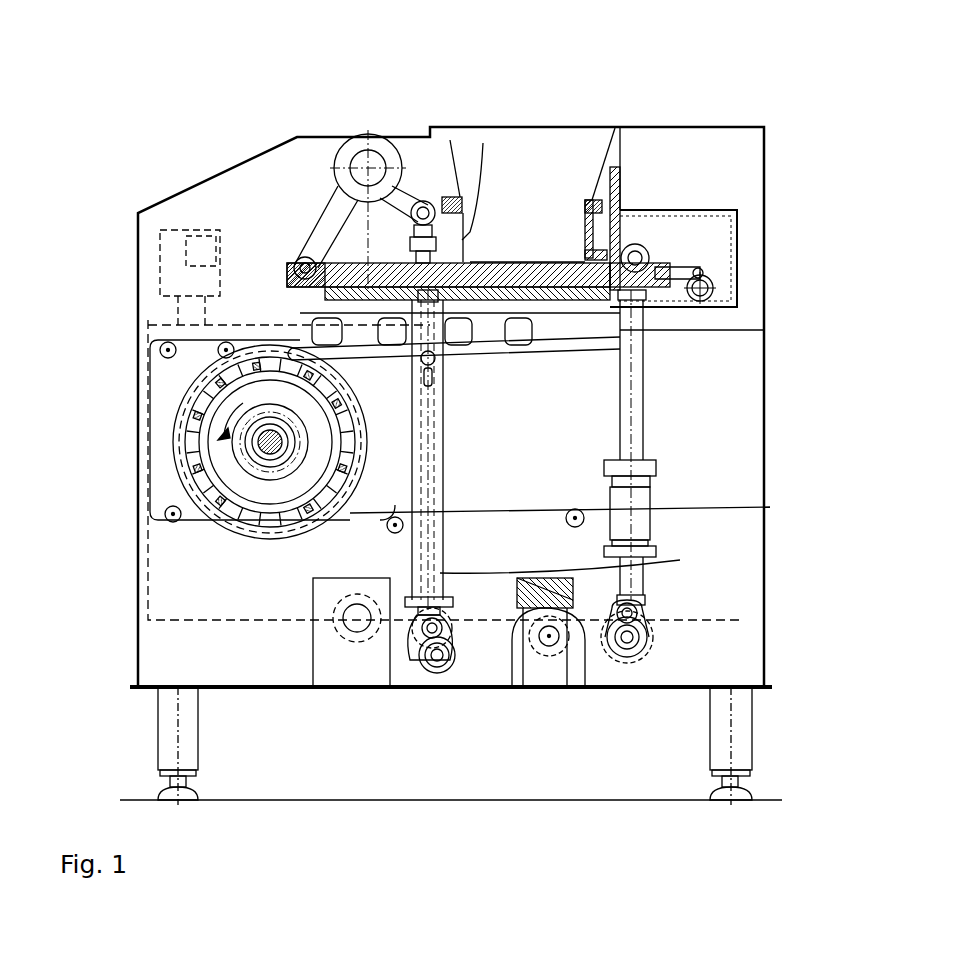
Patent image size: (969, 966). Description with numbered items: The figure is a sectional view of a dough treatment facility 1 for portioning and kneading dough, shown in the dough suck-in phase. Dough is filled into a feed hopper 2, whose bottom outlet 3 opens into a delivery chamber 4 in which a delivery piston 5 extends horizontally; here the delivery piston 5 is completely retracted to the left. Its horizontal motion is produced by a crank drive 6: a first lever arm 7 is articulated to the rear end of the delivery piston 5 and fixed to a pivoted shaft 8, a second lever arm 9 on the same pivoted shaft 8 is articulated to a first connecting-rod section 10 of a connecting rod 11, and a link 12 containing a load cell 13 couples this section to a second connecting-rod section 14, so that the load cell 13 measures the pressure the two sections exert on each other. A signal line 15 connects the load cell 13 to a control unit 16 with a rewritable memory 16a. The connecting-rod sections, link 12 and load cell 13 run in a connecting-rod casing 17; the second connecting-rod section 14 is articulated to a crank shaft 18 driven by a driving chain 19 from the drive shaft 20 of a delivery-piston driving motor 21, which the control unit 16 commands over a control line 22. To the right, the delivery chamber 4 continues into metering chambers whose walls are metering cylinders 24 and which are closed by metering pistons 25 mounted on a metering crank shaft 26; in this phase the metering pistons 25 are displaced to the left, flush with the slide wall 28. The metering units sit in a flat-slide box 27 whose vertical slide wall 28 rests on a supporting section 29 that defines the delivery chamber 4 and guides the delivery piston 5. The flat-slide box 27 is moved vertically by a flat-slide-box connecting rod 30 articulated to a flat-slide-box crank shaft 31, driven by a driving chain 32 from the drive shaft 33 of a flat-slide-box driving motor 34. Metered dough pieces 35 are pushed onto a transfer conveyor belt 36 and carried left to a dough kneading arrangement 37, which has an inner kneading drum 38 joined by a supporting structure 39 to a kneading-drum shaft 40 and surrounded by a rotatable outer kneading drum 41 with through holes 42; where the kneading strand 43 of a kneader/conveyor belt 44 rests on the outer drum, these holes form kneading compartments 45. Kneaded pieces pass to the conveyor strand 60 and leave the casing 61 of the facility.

The dough treatment facility 1 is at (549, 92).
The feed hopper 2 is at (498, 168).
The bottom outlet 3 is at (462, 140).
The delivery chamber 4 is at (543, 270).
The delivery piston 5 is at (287, 292).
The crank drive 6 is at (314, 204).
The first lever arm 7 is at (332, 178).
The pivoted shaft 8 is at (352, 140).
The second lever arm 9 is at (412, 190).
The first connecting-rod section 10 is at (418, 225).
The connecting rod 11 is at (657, 468).
The link 12 is at (300, 313).
The load cell 13 is at (610, 300).
The second connecting-rod section 14 is at (680, 560).
The signal line 15 is at (160, 352).
The control unit 16 is at (160, 272).
The rewritable memory 16a is at (200, 250).
The connecting-rod casing 17 is at (450, 450).
The crank shaft 18 is at (445, 668).
The driving chain 19 is at (415, 650).
The drive shaft 20 is at (357, 620).
The delivery-piston driving motor 21 is at (325, 640).
The control line 22 is at (183, 620).
The metering cylinder 24 is at (737, 210).
The metering piston 25 is at (705, 268).
The metering crank shaft 26 is at (713, 288).
The flat-slide box 27 is at (737, 240).
The slide wall 28 is at (603, 257).
The supporting section 29 is at (640, 257).
The flat-slide-box connecting rod 30 is at (644, 420).
The flat-slide-box crank shaft 31 is at (641, 645).
The driving chain 32 is at (606, 662).
The drive shaft 33 is at (552, 648).
The flat-slide-box driving motor 34 is at (522, 676).
The dough pieces 35 is at (620, 333).
The transfer conveyor belt 36 is at (620, 345).
The dough kneading arrangement 37 is at (367, 492).
The inner kneading drum 38 is at (236, 444).
The supporting structure 39 is at (185, 440).
The kneading-drum shaft 40 is at (232, 446).
The outer kneading drum 41 is at (253, 523).
The through holes 42 is at (266, 525).
The kneading strand 43 is at (200, 405).
The kneader/conveyor belt 44 is at (652, 500).
The kneading compartments 45 is at (258, 455).
The conveyor strand 60 is at (770, 507).
The casing 61 is at (195, 186).